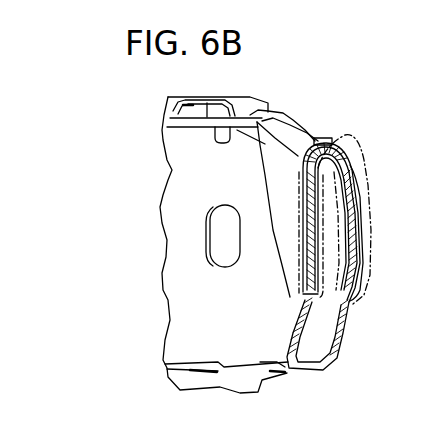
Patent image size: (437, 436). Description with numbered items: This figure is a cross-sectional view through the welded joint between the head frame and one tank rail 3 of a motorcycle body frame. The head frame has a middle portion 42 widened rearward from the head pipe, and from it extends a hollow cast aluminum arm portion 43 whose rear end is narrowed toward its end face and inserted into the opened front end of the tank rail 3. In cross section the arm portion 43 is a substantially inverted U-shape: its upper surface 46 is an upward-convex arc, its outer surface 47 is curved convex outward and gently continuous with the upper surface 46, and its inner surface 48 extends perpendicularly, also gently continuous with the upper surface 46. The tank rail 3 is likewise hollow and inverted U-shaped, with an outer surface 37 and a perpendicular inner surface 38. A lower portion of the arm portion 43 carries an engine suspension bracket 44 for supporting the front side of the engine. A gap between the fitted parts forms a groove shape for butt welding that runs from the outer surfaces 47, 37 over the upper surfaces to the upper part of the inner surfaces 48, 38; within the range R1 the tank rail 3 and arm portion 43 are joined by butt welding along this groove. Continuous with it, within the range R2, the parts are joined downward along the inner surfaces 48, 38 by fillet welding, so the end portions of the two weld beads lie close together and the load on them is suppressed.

The middle portion 42 is at (180, 175).
The arm portion 43 is at (279, 122).
The tank rail 3 is at (331, 148).
The upper surface 46 is at (340, 156).
The inner surface 38 is at (303, 186).
The outer surface 47 is at (358, 245).
The outer surface 37 is at (356, 192).
The range R1 is at (364, 172).
The range R2 is at (299, 184).
The inner surface 48 is at (308, 246).
The engine suspension bracket 44 is at (340, 327).